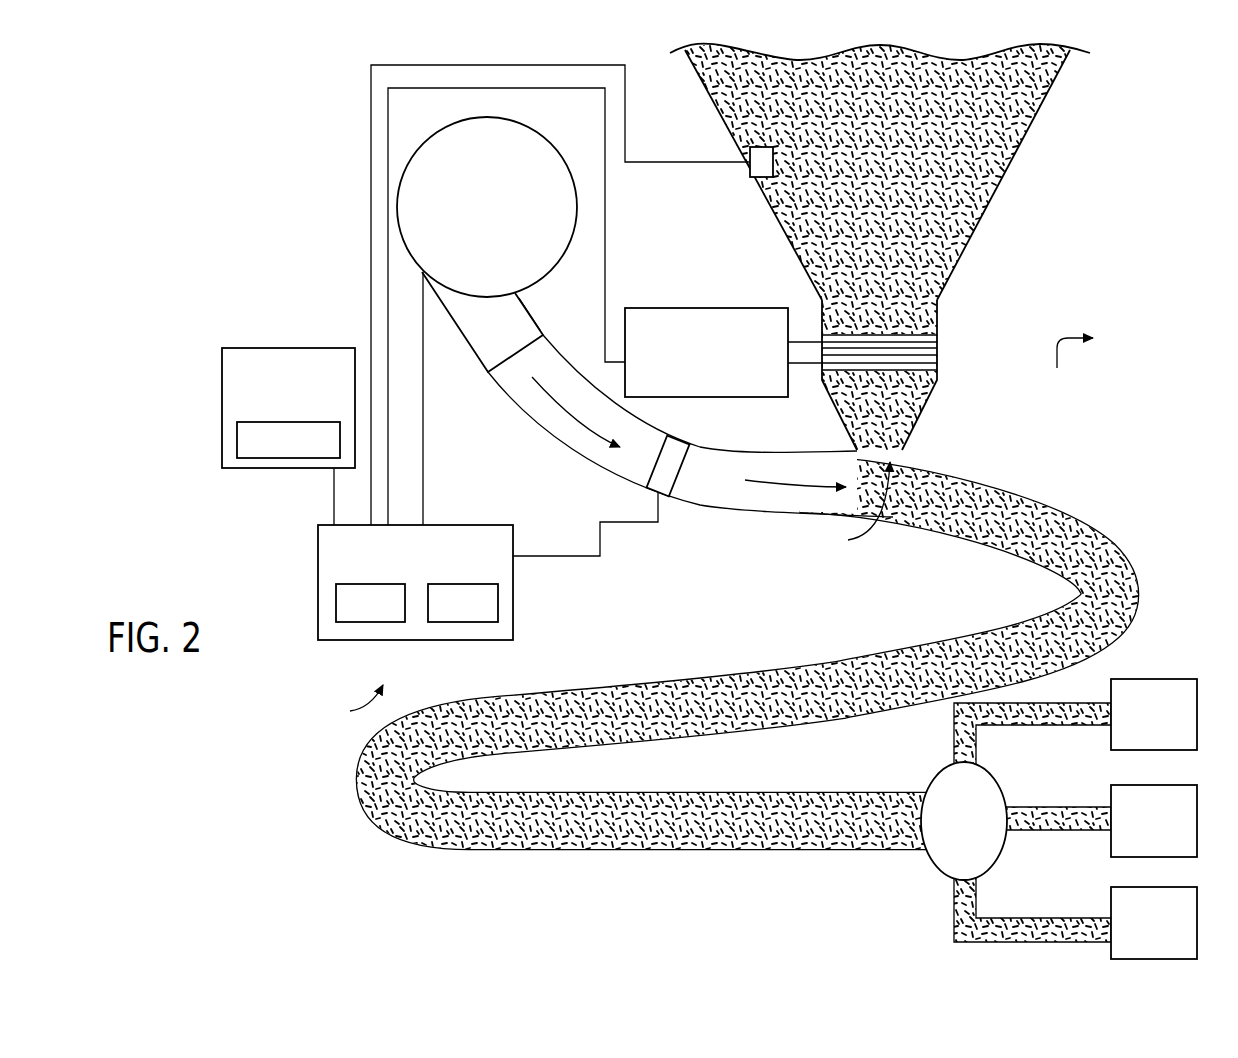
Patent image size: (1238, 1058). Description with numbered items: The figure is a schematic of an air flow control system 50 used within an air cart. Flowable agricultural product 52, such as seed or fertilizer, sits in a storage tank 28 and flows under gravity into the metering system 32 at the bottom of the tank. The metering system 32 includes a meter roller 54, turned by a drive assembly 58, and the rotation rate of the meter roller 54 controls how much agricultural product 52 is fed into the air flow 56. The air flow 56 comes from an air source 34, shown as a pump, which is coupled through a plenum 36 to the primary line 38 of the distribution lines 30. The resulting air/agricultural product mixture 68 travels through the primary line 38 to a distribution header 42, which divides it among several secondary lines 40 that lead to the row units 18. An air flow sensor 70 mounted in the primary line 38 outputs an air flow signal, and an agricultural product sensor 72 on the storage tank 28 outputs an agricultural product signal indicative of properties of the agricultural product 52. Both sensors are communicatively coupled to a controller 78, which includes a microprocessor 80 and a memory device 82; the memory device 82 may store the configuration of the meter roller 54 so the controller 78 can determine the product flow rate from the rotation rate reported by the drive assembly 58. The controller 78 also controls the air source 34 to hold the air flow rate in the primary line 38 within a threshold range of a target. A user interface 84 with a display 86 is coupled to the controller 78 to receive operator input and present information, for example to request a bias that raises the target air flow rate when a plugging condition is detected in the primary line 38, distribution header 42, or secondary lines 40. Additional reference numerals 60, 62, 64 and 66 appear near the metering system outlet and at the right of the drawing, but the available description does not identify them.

The row unit 18 is at (1133, 679).
The storage tank 28 is at (705, 87).
The distribution lines 30 is at (732, 528).
The metering system 32 is at (950, 322).
The air source 34 is at (570, 243).
The plenum 36 is at (458, 328).
The primary line 38 is at (620, 478).
The secondary lines 40 is at (1035, 725).
The distribution header 42 is at (926, 860).
The air flow control system 50 is at (354, 705).
The flowable agricultural product 52 is at (1027, 97).
The meter roller 54 is at (922, 378).
The air flow 56 is at (567, 415).
The drive assembly 58 is at (703, 308).
The metering roller 60 is at (910, 350).
The roller housing 62 is at (927, 363).
The direction of travel 64 is at (1069, 370).
The seed flow 66 is at (856, 510).
The air/agricultural product mixture 68 is at (1043, 543).
The air flow sensor 70 is at (680, 432).
The agricultural product sensor 72 is at (751, 175).
The controller 78 is at (318, 542).
The microprocessor 80 is at (366, 622).
The memory device 82 is at (461, 622).
The user interface 84 is at (290, 348).
The display 86 is at (283, 460).